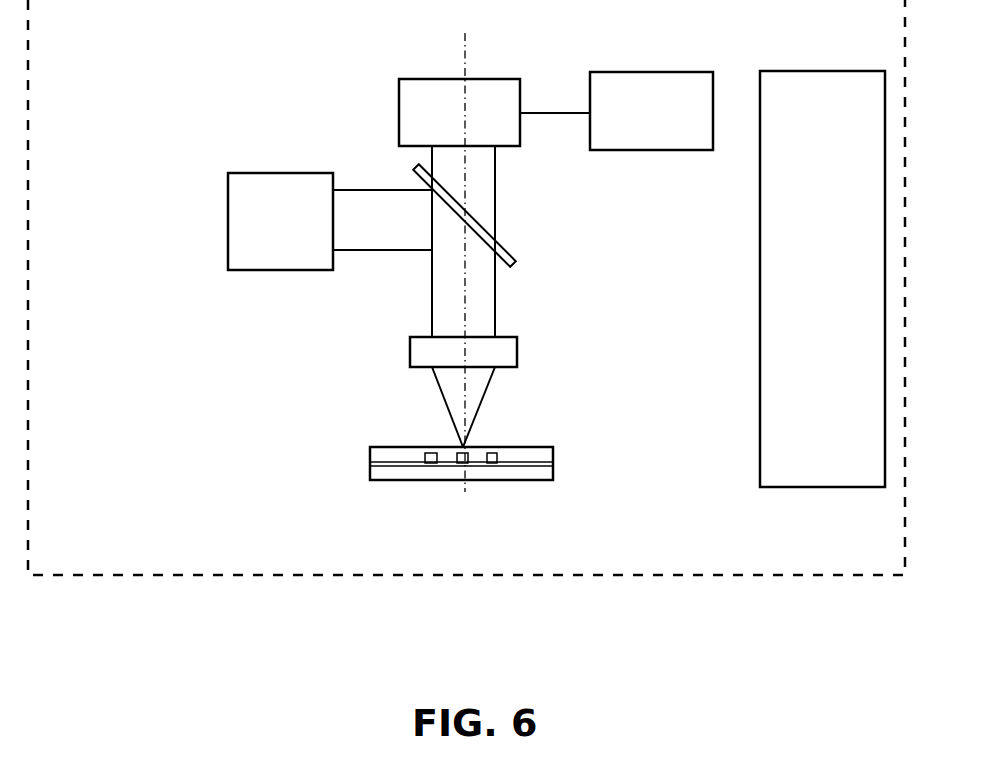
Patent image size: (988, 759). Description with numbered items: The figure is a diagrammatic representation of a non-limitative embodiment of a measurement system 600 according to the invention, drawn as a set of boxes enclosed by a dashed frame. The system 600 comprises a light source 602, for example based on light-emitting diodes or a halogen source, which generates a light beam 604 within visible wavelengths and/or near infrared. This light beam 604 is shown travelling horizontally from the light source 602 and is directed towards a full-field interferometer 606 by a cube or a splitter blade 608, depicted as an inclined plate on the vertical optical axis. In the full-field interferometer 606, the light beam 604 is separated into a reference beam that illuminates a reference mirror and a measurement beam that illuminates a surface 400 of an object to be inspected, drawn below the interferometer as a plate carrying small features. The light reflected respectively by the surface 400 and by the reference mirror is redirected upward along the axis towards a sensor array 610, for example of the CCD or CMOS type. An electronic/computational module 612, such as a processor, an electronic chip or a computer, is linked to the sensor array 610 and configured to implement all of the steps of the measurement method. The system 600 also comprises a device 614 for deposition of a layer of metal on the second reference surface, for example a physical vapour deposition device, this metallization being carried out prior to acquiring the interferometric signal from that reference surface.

The measurement system 600 is at (597, 597).
The light source 602 is at (228, 227).
The light beam 604 is at (362, 190).
The full-field interferometer 606 is at (410, 353).
The splitter blade 608 is at (477, 222).
The sensor array 610 is at (418, 79).
The electronic/computational module 612 is at (675, 152).
The deposition device 614 is at (820, 488).
The surface 400 is at (399, 447).